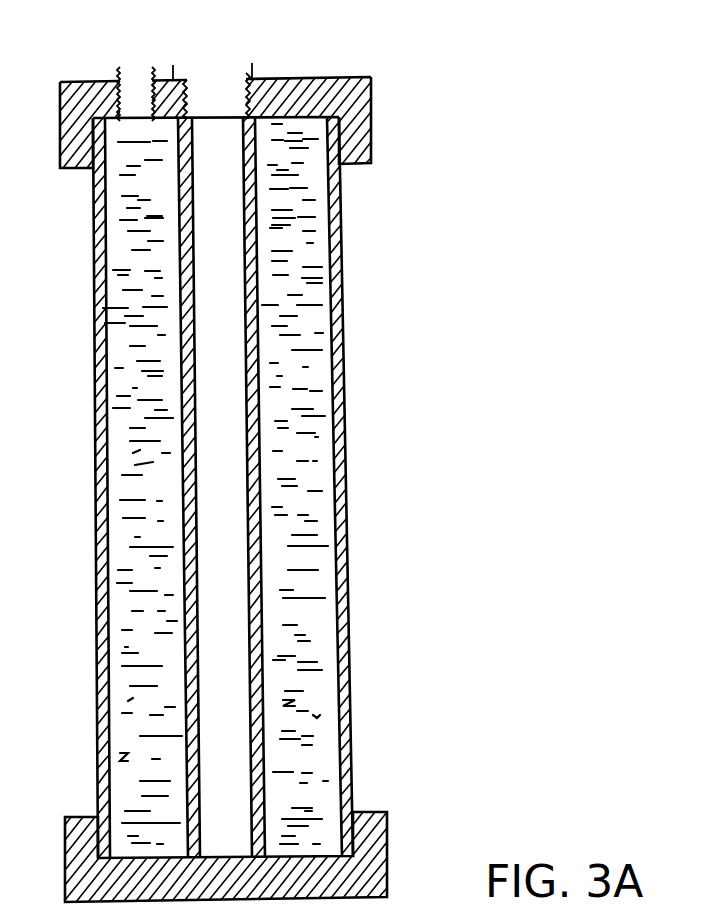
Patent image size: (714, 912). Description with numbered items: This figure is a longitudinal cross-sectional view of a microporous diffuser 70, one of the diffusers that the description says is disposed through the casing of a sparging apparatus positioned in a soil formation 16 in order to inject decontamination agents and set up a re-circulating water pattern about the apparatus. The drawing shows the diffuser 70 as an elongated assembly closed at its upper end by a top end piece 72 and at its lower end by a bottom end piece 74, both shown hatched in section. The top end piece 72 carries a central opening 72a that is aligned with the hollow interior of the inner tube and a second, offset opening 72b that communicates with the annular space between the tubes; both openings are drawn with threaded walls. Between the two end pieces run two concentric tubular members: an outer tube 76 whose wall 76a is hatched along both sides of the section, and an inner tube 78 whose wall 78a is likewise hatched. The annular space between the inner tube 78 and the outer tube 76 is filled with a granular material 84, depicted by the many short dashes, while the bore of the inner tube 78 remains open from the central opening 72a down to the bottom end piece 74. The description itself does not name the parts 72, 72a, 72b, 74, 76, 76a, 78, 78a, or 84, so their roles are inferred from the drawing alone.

The soil formation 16 is at (360, 715).
The microporous diffuser 70 is at (511, 336).
The top end cap 72 is at (371, 116).
The central threaded port 72a is at (203, 63).
The threaded port 72b is at (130, 68).
The bottom end cap 74 is at (387, 875).
The outer tube 76 is at (347, 442).
The outer tube wall 76a is at (347, 498).
The inner tube 78 is at (272, 553).
The inner tube wall 78a is at (262, 610).
The granular sorbent material 84 is at (308, 267).